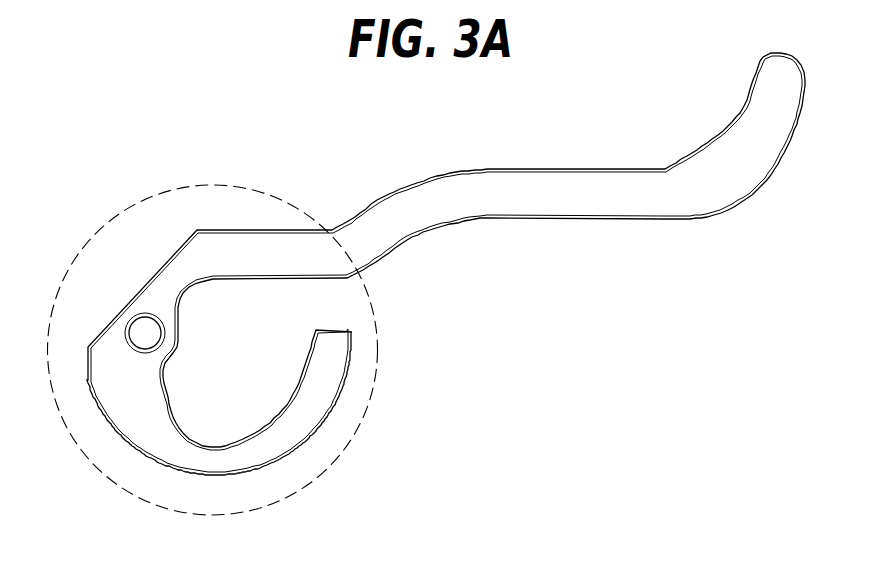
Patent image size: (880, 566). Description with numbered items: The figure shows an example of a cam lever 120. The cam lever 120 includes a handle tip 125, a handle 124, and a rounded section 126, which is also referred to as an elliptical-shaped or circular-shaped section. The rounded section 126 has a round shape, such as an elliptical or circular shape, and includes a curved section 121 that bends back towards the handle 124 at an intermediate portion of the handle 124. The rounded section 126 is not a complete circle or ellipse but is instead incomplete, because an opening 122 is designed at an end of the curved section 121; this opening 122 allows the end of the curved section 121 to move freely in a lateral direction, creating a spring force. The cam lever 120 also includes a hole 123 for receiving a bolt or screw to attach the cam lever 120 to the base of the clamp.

The cam lever 120 is at (139, 105).
The curved section 121 is at (308, 432).
The opening 122 is at (338, 303).
The hole 123 is at (146, 333).
The handle 124 is at (548, 188).
The handle tip 125 is at (773, 108).
The rounded section 126 is at (108, 488).